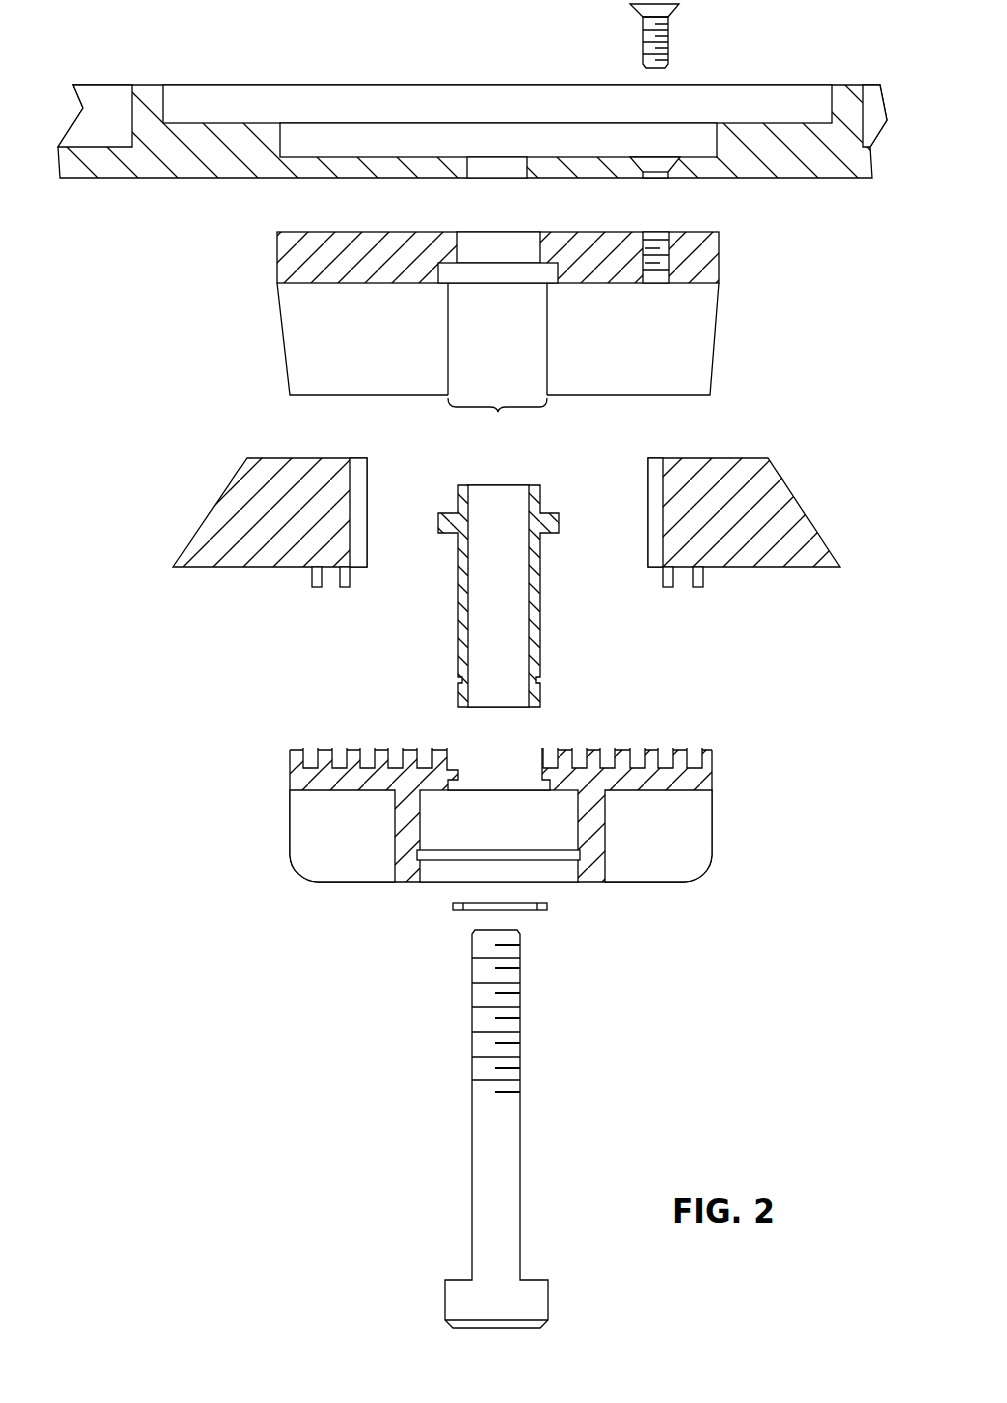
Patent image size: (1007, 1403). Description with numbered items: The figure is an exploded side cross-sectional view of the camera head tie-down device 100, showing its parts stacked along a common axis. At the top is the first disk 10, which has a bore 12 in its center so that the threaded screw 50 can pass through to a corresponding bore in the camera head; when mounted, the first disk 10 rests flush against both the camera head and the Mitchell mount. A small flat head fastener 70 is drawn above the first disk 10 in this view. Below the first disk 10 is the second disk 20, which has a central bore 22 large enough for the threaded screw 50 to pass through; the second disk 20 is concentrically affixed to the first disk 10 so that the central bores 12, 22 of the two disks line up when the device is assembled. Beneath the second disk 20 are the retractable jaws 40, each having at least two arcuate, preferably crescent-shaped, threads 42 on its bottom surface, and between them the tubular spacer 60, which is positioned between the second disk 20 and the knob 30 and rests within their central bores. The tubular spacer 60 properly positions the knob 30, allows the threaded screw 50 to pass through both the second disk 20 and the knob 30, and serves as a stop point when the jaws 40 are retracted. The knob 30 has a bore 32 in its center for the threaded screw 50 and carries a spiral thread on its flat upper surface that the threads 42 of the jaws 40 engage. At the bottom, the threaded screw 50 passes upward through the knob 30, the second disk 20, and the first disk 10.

The camera head tie-down device 100 is at (182, 737).
The first disk 10 is at (472, 126).
The bore 12 is at (469, 166).
The countersunk screw 70 is at (663, 21).
The second disk 20 is at (540, 345).
The central bore 22 is at (467, 407).
The retractable jaws 40 is at (498, 579).
The arcuate threads 42 is at (316, 588).
The tubular spacer 60 is at (523, 627).
The knob 30 is at (547, 814).
The bore 32 is at (545, 750).
The threaded screw 50 is at (515, 1145).